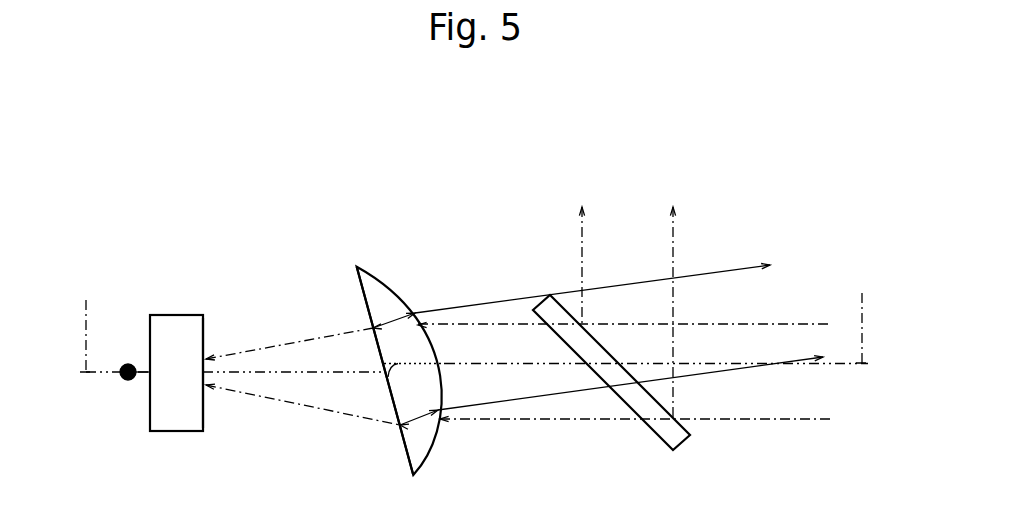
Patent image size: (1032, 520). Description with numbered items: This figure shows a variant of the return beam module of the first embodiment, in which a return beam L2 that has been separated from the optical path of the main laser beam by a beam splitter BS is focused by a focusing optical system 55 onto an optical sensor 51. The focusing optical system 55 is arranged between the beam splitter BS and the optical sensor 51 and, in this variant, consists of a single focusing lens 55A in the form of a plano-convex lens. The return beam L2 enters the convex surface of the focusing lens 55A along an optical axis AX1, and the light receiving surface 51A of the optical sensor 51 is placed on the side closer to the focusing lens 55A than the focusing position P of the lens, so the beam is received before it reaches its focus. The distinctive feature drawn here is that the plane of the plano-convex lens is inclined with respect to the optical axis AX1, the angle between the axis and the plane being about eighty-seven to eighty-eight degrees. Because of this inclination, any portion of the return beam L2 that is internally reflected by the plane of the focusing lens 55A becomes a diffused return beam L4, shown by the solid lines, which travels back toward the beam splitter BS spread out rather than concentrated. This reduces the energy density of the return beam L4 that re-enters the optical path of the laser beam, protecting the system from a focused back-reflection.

The optical sensor 51 is at (178, 314).
The light receiving surface 51A is at (204, 333).
The focusing optical system 55 is at (377, 225).
The focusing lens 55A is at (360, 287).
The focusing position P is at (127, 381).
The optical axis AX1 is at (475, 319).
The return beam internally reflected by the plane L4 is at (438, 310).
The return beam L2 is at (782, 422).
The beam splitter BS is at (548, 295).